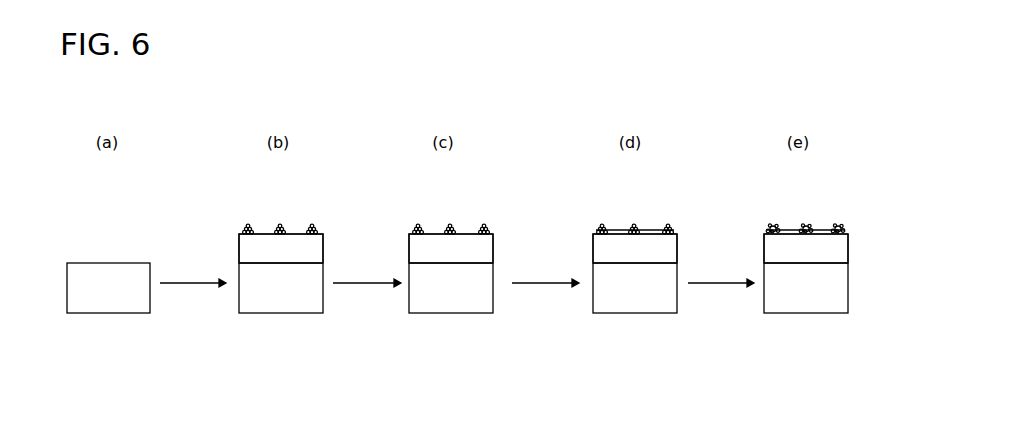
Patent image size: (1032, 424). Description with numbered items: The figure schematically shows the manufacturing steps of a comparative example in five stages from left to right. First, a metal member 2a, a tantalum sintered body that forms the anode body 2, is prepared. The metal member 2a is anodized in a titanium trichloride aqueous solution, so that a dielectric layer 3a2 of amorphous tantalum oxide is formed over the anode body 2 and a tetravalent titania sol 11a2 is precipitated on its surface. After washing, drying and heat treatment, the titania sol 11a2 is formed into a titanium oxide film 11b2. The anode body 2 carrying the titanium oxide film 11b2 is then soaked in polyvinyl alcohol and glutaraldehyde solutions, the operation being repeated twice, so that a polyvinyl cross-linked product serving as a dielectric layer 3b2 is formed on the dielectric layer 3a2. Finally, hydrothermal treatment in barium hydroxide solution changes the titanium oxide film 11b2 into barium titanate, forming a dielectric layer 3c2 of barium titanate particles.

The metal member 2a is at (108, 323).
The anode body 2 is at (543, 308).
The dielectric layer 3a2 is at (565, 248).
The tetravalent titania sol 11a2 is at (280, 206).
The titanium oxide film 11b2 is at (543, 206).
The dielectric layer 3b2 is at (648, 231).
The dielectric layer 3c2 is at (805, 205).